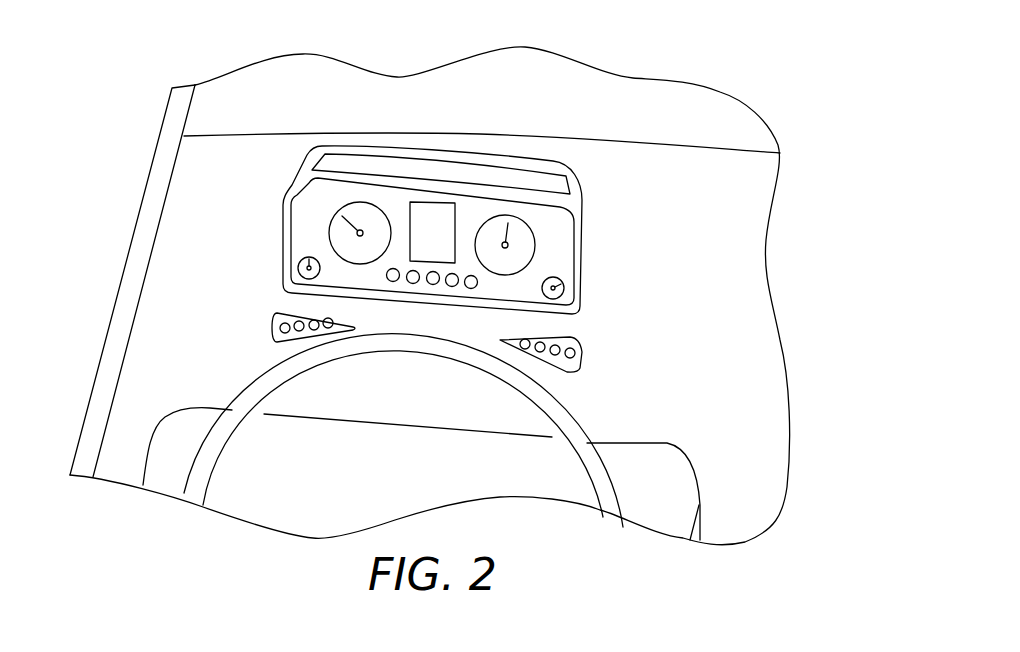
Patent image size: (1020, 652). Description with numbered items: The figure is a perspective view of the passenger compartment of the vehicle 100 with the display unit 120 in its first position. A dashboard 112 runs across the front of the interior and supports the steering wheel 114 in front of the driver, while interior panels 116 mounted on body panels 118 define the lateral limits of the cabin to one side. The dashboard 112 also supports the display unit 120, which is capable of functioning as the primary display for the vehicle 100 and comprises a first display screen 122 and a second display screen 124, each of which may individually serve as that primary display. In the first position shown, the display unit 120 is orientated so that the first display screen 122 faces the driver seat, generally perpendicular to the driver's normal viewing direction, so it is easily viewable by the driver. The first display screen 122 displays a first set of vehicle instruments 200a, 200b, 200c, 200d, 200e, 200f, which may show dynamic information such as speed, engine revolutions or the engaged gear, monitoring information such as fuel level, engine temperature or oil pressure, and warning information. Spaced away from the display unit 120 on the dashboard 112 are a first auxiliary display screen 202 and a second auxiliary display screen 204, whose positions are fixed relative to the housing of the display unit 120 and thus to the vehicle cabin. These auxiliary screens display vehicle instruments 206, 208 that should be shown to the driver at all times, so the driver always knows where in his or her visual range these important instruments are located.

The vehicle 100 is at (636, 61).
The dashboard 112 is at (684, 156).
The steering wheel 114 is at (237, 440).
The interior panels 116 is at (192, 108).
The body panels 118 is at (168, 107).
The display unit 120 is at (328, 141).
The first display screen 122 is at (291, 238).
The second display screen 124 is at (535, 181).
The vehicle instrument 200a is at (564, 292).
The vehicle instrument 200b is at (547, 250).
The vehicle instrument 200c is at (432, 216).
The vehicle instrument 200d is at (329, 219).
The vehicle instrument 200e is at (298, 266).
The vehicle instrument 200f is at (433, 291).
The first auxiliary display screen 202 is at (273, 337).
The second auxiliary display screen 204 is at (583, 365).
The vehicle instruments 206 is at (279, 326).
The vehicle instruments 208 is at (582, 352).